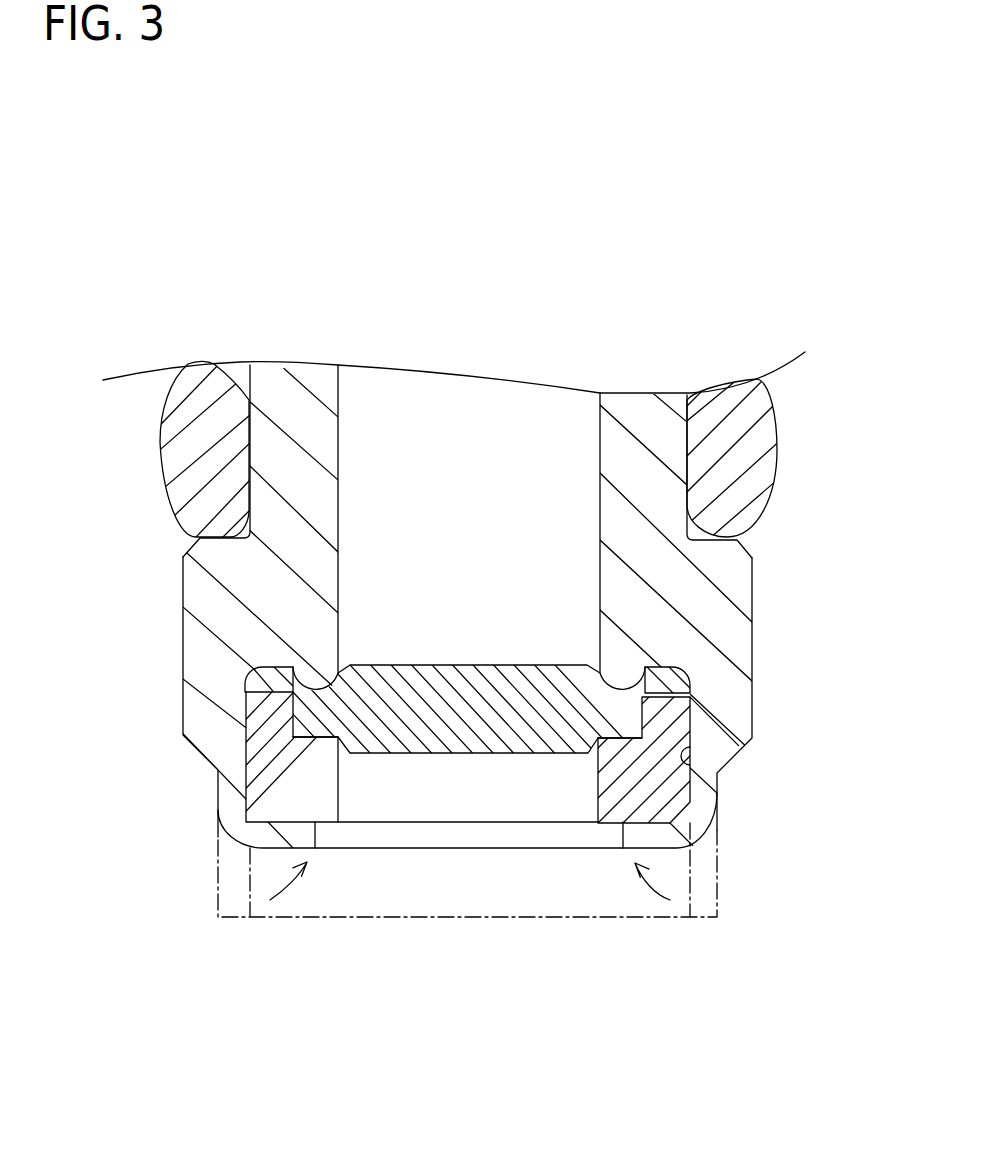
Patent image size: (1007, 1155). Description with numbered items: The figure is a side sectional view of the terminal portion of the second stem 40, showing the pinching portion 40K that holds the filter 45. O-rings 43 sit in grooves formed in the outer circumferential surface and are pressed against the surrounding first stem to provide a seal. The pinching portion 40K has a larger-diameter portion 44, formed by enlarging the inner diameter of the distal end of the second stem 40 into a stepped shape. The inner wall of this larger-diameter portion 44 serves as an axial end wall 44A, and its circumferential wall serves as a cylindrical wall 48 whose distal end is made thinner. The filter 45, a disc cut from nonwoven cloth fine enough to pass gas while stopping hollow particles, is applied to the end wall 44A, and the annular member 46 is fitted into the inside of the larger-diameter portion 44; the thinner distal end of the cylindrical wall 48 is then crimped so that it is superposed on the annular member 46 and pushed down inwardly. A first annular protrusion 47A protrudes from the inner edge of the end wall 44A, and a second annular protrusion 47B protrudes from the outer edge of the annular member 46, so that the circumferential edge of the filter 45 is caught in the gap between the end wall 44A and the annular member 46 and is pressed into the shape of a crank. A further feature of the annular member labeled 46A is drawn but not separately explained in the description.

The second stem 40 is at (164, 585).
The pinching portion 40K is at (646, 1047).
The O-rings 43 is at (762, 447).
The larger-diameter portion 44 is at (690, 767).
The axial end wall 44A is at (690, 690).
The filter 45 is at (525, 747).
The annular member 46 is at (665, 790).
The slit 46A is at (298, 696).
The first annular protrusion 47A is at (250, 710).
The second annular protrusion 47B is at (262, 733).
The cylindrical wall 48 is at (228, 810).